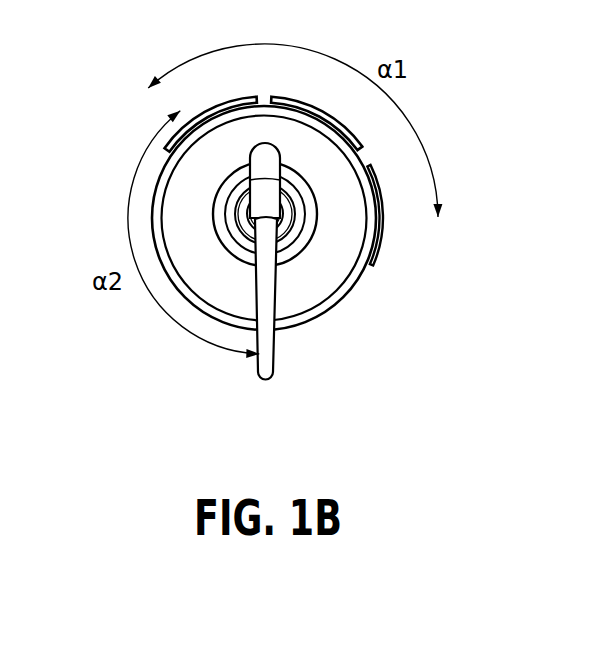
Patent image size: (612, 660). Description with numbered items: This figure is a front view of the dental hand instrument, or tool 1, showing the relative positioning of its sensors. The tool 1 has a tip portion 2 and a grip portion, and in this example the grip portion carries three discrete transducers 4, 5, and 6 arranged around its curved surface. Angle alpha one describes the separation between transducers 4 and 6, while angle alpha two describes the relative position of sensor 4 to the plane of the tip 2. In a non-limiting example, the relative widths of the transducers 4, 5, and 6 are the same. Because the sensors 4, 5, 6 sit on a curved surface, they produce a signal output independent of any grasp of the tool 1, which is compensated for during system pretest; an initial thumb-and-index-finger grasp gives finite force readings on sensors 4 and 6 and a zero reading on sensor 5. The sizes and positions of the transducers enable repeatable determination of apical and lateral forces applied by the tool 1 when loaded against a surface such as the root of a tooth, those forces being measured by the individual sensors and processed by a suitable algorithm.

The tool 1 is at (318, 287).
The tip portion 2 is at (268, 364).
The transducer 4 is at (217, 102).
The transducer 5 is at (308, 101).
The transducer 6 is at (384, 240).